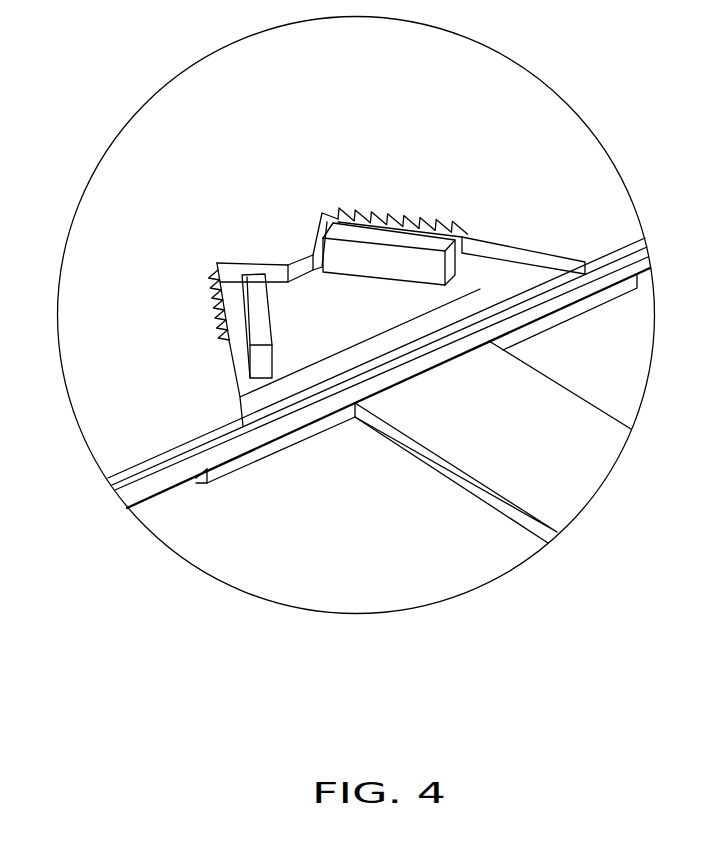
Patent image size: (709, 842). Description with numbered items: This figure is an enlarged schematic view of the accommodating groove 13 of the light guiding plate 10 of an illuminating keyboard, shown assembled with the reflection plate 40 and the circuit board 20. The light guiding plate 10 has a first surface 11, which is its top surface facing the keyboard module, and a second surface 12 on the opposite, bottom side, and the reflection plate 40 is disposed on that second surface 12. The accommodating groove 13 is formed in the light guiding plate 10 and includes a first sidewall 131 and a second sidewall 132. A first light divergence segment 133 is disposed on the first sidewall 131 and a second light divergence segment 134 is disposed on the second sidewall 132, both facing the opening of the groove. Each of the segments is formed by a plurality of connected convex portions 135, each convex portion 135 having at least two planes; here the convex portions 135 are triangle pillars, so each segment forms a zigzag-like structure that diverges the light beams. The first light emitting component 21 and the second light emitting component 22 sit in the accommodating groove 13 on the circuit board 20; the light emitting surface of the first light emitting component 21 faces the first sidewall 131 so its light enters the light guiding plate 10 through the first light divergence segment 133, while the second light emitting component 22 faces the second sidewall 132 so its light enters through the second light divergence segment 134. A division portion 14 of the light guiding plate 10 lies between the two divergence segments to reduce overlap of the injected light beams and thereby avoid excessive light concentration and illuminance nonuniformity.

The light guiding plate 10 is at (122, 203).
The first surface 11 is at (145, 124).
The second surface 12 is at (516, 270).
The accommodating groove 13 is at (516, 270).
The division portion 14 is at (298, 265).
The circuit board 20 is at (605, 428).
The first light emitting component 21 is at (258, 313).
The second light emitting component 22 is at (397, 266).
The reflection plate 40 is at (633, 267).
The first sidewall 131 is at (240, 397).
The second sidewall 132 is at (575, 272).
The first light divergence segment 133 is at (216, 303).
The second light divergence segment 134 is at (398, 221).
The convex portion 135 is at (213, 273).